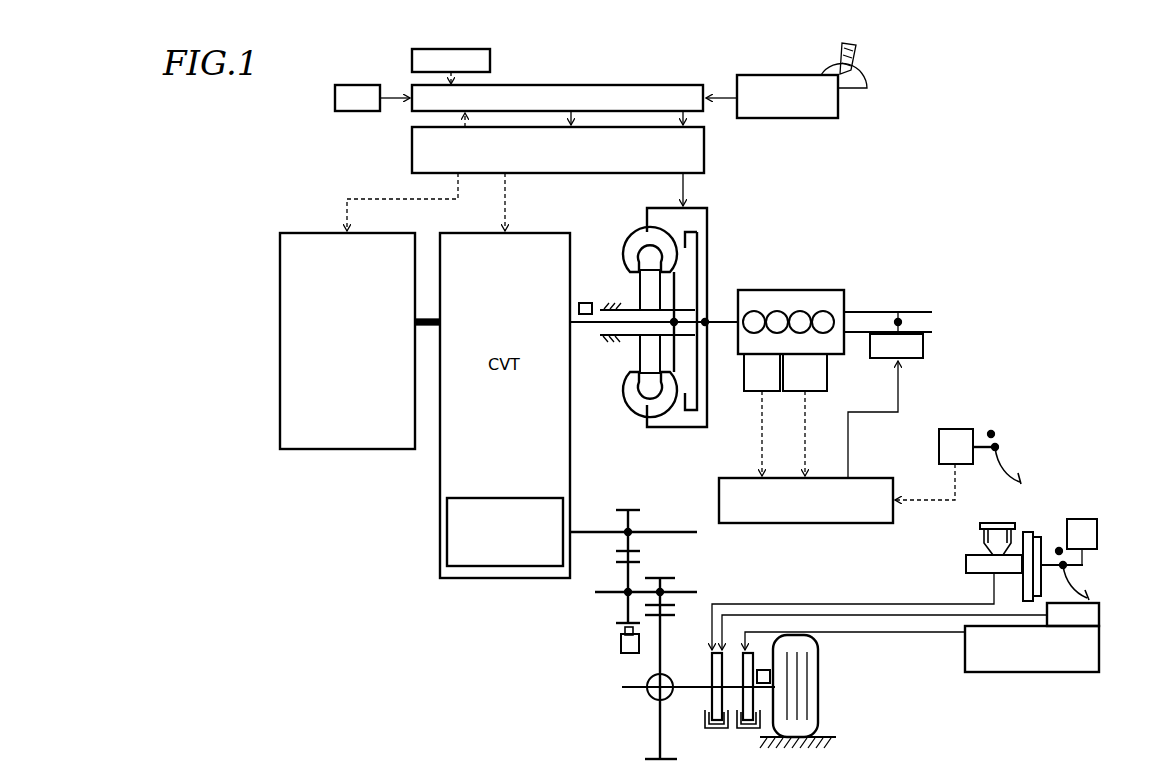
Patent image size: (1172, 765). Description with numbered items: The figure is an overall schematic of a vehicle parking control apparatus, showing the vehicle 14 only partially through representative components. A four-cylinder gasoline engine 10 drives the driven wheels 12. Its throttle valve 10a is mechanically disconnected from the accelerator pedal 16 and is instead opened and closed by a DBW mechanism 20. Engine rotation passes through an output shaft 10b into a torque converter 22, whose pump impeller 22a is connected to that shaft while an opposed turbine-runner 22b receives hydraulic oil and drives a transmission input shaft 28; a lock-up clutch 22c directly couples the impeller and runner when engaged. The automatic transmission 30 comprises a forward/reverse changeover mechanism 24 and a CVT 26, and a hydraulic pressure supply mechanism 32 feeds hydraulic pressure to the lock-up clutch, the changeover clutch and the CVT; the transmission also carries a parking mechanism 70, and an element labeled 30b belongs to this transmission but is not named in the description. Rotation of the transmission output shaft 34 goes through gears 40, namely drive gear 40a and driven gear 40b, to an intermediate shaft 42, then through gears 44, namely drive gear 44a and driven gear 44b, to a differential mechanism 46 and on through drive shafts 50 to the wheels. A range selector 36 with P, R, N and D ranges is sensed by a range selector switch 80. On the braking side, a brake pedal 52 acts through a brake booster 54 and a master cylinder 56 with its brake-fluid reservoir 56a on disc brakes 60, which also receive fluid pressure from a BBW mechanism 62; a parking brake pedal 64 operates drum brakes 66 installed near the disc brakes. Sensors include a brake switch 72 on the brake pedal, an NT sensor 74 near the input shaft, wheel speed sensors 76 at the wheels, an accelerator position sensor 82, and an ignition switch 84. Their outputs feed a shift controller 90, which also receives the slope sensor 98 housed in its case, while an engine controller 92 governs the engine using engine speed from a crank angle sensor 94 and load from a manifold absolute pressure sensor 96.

The engine 10 is at (823, 290).
The throttle valve 10a is at (902, 322).
The output shaft 10b is at (723, 326).
The driven wheels 12 is at (820, 640).
The vehicle 14 is at (946, 139).
The accelerator pedal 16 is at (1013, 470).
The DBW mechanism 20 is at (925, 346).
The torque converter 22 is at (657, 317).
The pump impeller 22a is at (636, 232).
The turbine-runner 22b is at (668, 416).
The lock-up clutch 22c is at (702, 230).
The forward/reverse changeover mechanism 24 is at (337, 449).
The CVT 26 is at (438, 484).
The transmission input shaft 28 is at (588, 325).
The automatic transmission 30 is at (360, 379).
The counter shaft 30b is at (625, 607).
The hydraulic pressure supply mechanism 32 is at (705, 153).
The transmission output shaft 34 is at (590, 526).
The range selector 36 is at (858, 61).
The gears 40 is at (635, 547).
The drive gear 40a is at (620, 509).
The driven gear 40b is at (637, 556).
The intermediate shaft 42 is at (688, 598).
The gears 44 is at (701, 580).
The drive gear 44a is at (662, 577).
The driven gear 44b is at (666, 612).
The differential mechanism 46 is at (653, 701).
The drive shafts 50 is at (622, 690).
The brake pedal 52 is at (1090, 590).
The brake booster 54 is at (1034, 532).
The master cylinder 56 is at (979, 576).
The reservoir 56a is at (983, 540).
The disc brakes 60 is at (716, 729).
The BBW mechanism 62 is at (1100, 614).
The parking brake pedal 64 is at (1100, 645).
The drum brakes 66 is at (744, 729).
The parking mechanism 70 is at (516, 498).
The brake switch 72 is at (1098, 531).
The NT sensor 74 is at (585, 301).
The wheel speed sensors 76 is at (628, 655).
The range selector switch 80 is at (765, 75).
The accelerator position sensor 82 is at (956, 429).
The ignition switch 84 is at (364, 85).
The shift controller 90 is at (662, 85).
The engine controller 92 is at (838, 523).
The crank angle sensor 94 is at (760, 392).
The manifold absolute pressure sensor 96 is at (812, 392).
The slope sensor 98 is at (451, 66).